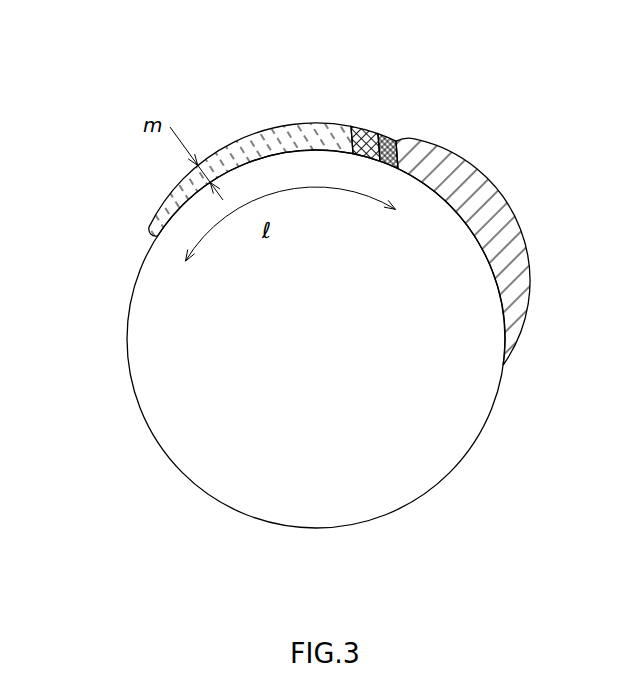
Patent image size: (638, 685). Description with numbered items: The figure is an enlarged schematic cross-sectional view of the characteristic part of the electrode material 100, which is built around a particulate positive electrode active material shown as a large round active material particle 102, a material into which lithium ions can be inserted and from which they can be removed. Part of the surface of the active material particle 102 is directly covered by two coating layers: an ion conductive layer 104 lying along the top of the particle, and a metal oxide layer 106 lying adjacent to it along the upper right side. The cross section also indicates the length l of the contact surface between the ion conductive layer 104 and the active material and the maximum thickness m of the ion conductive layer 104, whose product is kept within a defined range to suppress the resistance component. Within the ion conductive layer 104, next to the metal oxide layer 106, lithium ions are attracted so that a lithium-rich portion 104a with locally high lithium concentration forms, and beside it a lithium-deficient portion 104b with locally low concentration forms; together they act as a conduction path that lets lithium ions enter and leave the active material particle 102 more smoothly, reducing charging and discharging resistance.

The electrode material 100 is at (520, 98).
The active material particle 102 is at (128, 355).
The ion conductive layer 104 is at (273, 132).
The lithium-rich portion 104a is at (392, 137).
The lithium-deficient portion 104b is at (365, 130).
The metal oxide layer 106 is at (520, 237).